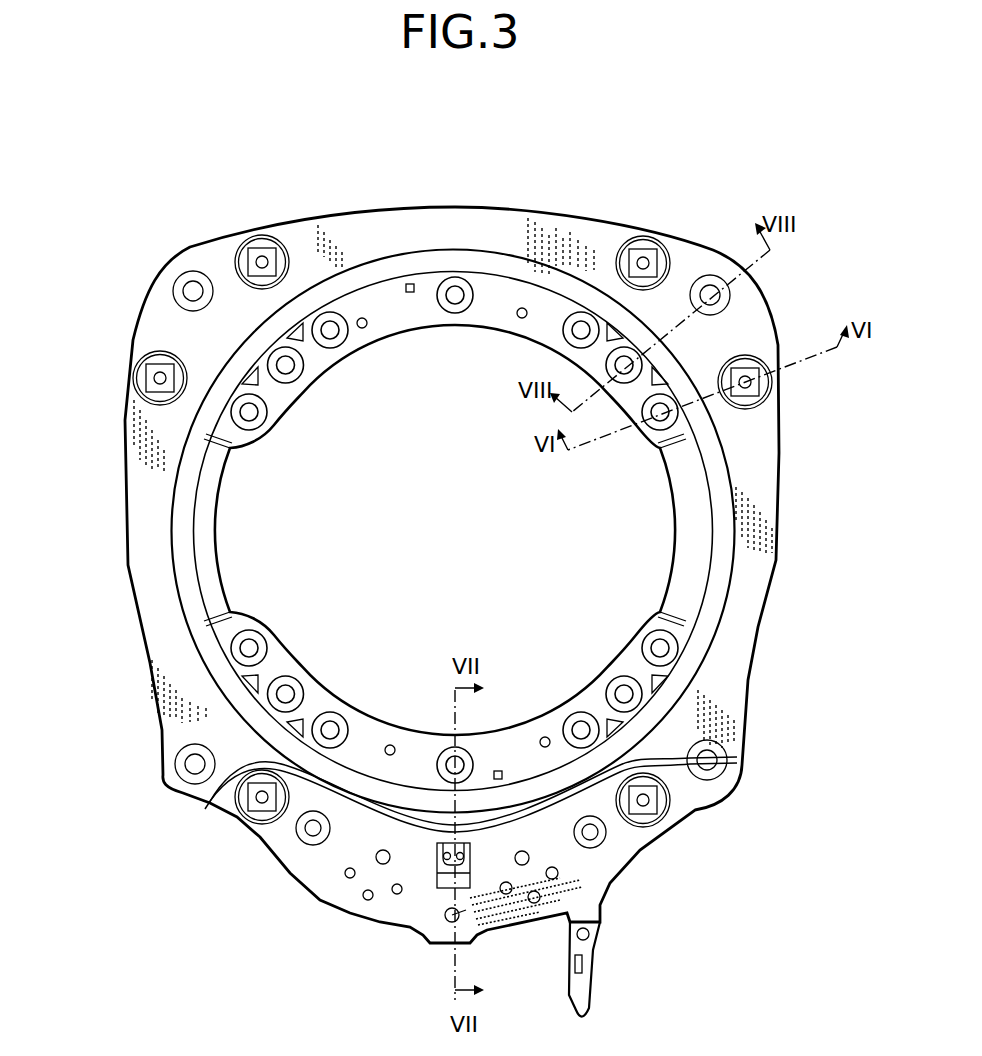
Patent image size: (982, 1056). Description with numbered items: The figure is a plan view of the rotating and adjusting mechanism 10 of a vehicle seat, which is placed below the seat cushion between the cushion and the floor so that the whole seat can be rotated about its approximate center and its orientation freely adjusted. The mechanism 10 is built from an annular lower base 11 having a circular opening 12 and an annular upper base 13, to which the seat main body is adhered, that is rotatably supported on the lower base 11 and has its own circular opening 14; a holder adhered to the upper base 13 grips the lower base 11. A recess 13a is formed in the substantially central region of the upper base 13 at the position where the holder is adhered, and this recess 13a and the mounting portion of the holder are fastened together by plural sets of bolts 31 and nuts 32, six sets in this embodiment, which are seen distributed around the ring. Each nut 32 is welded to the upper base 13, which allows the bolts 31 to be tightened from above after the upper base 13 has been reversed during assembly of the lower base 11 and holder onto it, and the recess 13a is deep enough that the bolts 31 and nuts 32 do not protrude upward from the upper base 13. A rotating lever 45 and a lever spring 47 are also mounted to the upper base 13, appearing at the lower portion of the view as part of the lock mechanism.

The rotating and adjusting mechanism 10 is at (162, 237).
The lower base 11 is at (277, 667).
The circular opening 12 is at (220, 590).
The upper base 13 is at (323, 885).
The recess 13a is at (710, 367).
The circular opening 14 is at (408, 790).
The bolt 31 is at (262, 256).
The nut 32 is at (277, 258).
The rotating lever 45 is at (584, 988).
The lever spring 47 is at (462, 920).